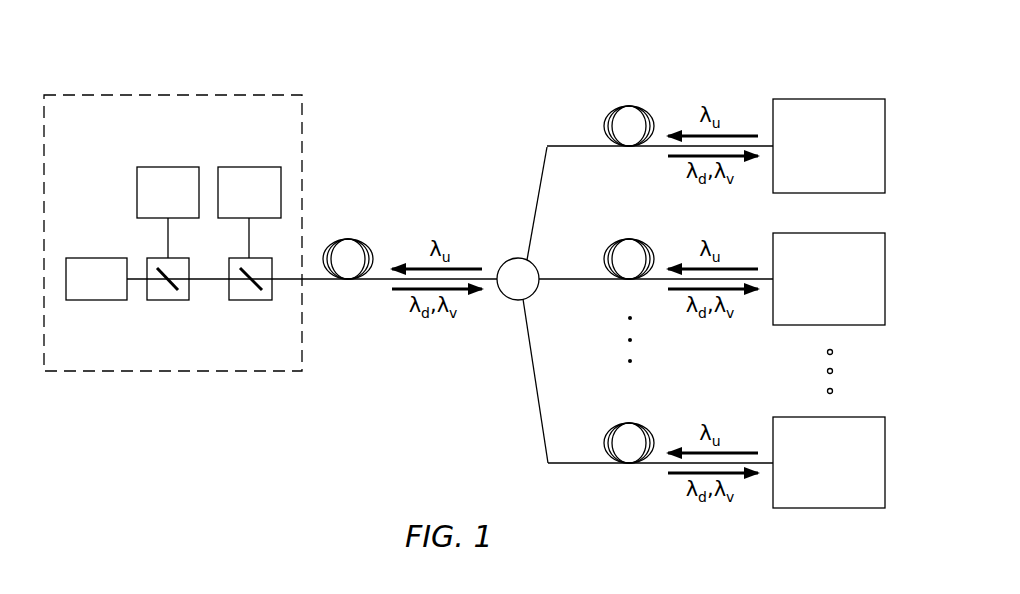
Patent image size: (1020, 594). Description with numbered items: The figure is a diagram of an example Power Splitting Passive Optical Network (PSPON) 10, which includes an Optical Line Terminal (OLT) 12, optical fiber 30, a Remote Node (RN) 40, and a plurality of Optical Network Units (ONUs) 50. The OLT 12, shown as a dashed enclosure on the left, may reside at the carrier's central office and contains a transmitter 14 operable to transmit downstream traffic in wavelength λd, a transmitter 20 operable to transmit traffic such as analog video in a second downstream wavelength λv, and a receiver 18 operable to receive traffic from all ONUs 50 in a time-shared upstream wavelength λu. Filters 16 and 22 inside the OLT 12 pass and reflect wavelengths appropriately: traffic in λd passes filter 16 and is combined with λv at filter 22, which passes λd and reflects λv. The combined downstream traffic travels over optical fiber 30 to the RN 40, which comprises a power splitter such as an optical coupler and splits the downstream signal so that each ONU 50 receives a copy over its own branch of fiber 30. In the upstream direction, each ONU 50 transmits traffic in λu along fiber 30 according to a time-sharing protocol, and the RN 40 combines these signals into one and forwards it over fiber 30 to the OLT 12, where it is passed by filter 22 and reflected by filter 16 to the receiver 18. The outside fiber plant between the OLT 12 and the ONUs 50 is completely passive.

The Power Splitting Passive Optical Network (PSPON) 10 is at (366, 57).
The Optical Line Terminal (OLT) 12 is at (122, 385).
The transmitter 14 is at (97, 301).
The filter 16 is at (163, 301).
The receiver 18 is at (166, 166).
The transmitter 20 is at (246, 166).
The filter 22 is at (247, 301).
The optical fiber 30 is at (346, 239).
The Remote Node (RN) 40 is at (504, 265).
The Optical Network Units (ONUs) 50 is at (835, 99).